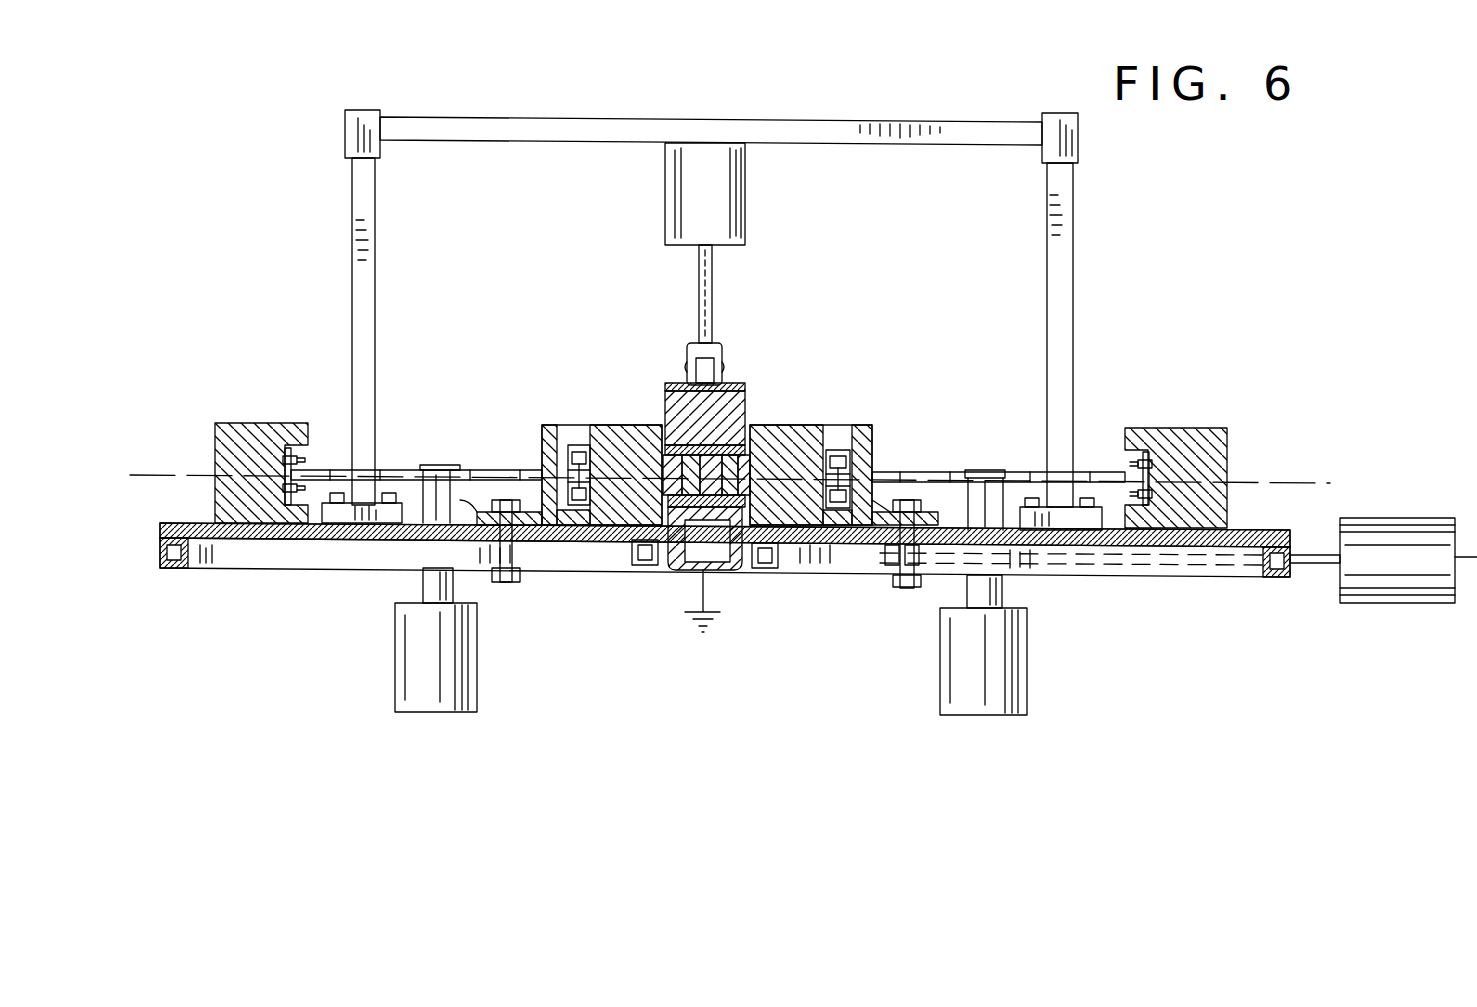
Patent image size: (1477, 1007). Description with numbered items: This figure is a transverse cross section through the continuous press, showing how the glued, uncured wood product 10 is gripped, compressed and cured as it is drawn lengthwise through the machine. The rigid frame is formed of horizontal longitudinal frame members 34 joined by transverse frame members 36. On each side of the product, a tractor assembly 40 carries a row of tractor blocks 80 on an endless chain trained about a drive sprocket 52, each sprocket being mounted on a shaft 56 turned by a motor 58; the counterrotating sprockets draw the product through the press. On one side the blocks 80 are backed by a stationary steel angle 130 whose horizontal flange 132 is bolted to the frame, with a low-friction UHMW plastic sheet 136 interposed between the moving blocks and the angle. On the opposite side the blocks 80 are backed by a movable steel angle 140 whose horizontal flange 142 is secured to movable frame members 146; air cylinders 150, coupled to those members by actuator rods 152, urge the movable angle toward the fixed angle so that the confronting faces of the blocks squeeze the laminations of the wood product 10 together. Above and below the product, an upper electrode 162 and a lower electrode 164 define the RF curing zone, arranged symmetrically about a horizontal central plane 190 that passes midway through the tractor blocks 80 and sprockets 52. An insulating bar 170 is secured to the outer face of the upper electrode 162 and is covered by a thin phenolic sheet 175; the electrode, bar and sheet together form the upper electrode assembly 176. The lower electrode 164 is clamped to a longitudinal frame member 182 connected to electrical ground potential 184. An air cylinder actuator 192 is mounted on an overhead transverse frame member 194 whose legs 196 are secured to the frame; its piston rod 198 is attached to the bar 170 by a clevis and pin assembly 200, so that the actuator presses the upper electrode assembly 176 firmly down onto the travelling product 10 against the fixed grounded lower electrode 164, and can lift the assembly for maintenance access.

The wood product 10 is at (738, 565).
The longitudinally extending frame members 34 is at (170, 570).
The transverse frame members 36 is at (235, 570).
The tractor assembly 40 is at (1135, 365).
The drive sprocket 52 is at (405, 470).
The shaft 56 is at (425, 585).
The motor 58 is at (478, 665).
The tractor blocks 80 is at (600, 425).
The steel angle 130 is at (545, 425).
The horizontal flange 132 is at (492, 510).
The sheet 136 is at (560, 428).
The steel angle 140 is at (885, 432).
The horizontal flange 142 is at (905, 500).
The movable frame members 146 is at (880, 570).
The air cylinders 150 is at (1385, 518).
The actuator rods 152 is at (1325, 555).
The upper electrode 162 is at (720, 430).
The lower electrode 164 is at (680, 572).
The bar 170 is at (662, 395).
The phenolic sheet 175 is at (660, 372).
The upper electrode assembly 176 is at (758, 370).
The longitudinal frame member 182 is at (745, 563).
The electrical ground potential 184 is at (695, 620).
The central plane 190 is at (184, 470).
The actuators 192 is at (748, 196).
The transverse frame member 194 is at (500, 117).
The legs 196 is at (352, 245).
The piston rod 198 is at (712, 292).
The clevis and pin assembly 200 is at (722, 373).